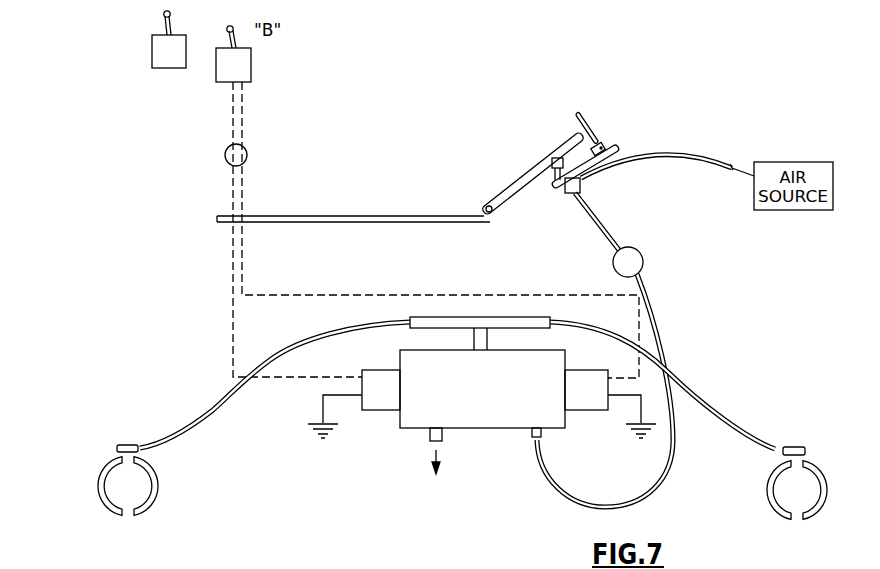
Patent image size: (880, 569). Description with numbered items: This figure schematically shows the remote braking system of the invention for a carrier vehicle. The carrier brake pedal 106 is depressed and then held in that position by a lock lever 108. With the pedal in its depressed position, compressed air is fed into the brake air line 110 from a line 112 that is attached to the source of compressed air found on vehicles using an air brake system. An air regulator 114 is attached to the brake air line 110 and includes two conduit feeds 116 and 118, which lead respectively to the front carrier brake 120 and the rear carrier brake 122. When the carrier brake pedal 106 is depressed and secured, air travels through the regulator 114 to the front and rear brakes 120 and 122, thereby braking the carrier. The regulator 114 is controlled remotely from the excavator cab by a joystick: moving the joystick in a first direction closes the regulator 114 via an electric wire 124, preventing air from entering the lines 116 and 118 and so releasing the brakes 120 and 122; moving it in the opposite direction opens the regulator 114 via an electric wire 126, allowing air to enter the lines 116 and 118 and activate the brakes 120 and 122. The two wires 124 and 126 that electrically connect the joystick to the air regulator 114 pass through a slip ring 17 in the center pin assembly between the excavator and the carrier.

The slip ring 17 is at (247, 152).
The carrier brake pedal 106 is at (521, 172).
The lock lever 108 is at (579, 112).
The brake air line 110 is at (619, 243).
The line 112 is at (667, 153).
The air regulator 114 is at (477, 430).
The conduit feed 116 is at (689, 383).
The conduit feed 118 is at (217, 412).
The front carrier brake 120 is at (815, 450).
The rear carrier brake 122 is at (97, 457).
The electric wire 124 is at (348, 294).
The electric wire 126 is at (232, 333).